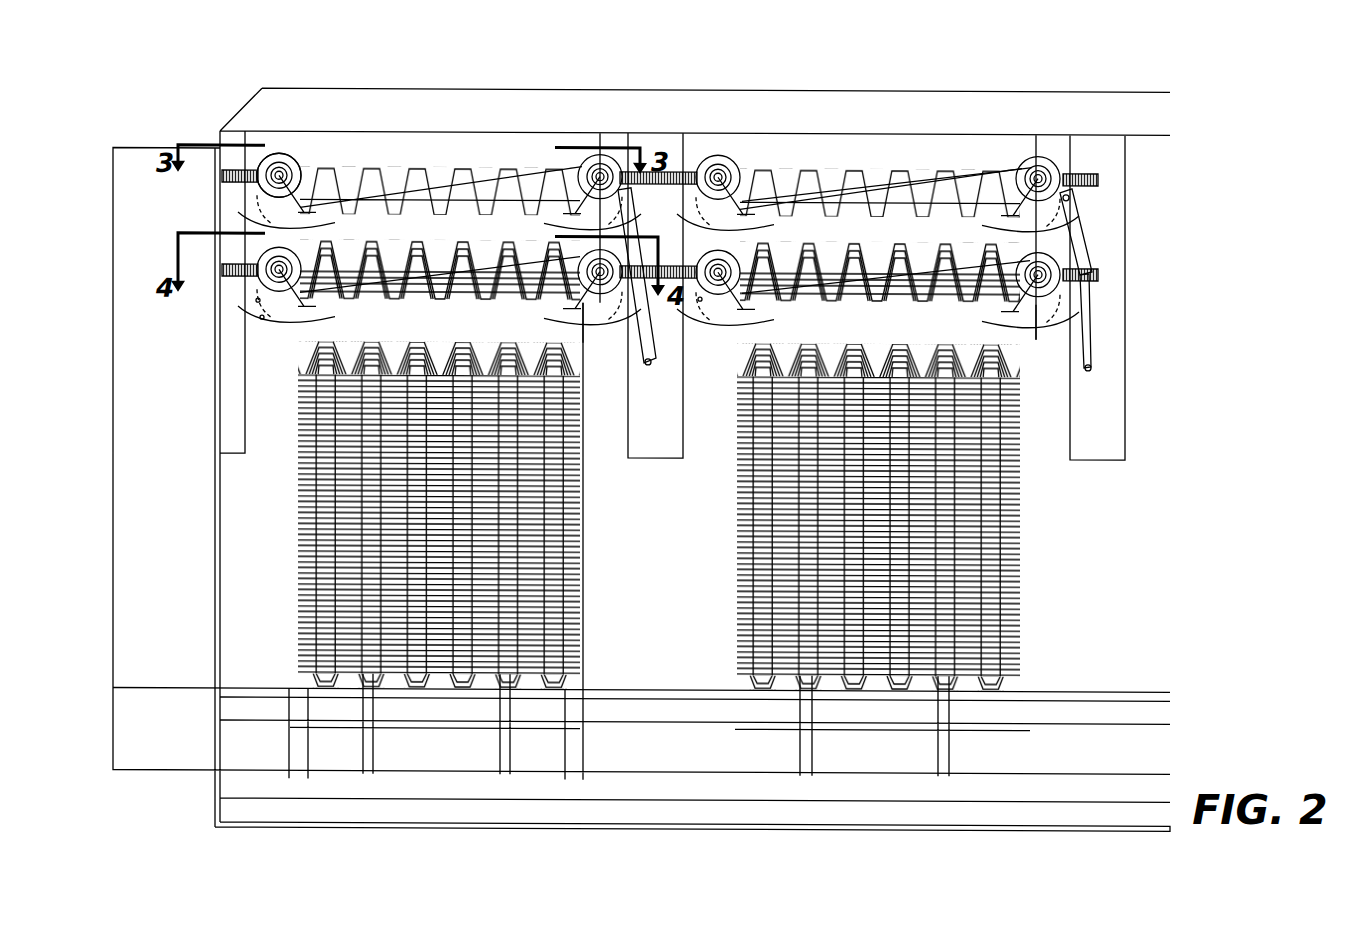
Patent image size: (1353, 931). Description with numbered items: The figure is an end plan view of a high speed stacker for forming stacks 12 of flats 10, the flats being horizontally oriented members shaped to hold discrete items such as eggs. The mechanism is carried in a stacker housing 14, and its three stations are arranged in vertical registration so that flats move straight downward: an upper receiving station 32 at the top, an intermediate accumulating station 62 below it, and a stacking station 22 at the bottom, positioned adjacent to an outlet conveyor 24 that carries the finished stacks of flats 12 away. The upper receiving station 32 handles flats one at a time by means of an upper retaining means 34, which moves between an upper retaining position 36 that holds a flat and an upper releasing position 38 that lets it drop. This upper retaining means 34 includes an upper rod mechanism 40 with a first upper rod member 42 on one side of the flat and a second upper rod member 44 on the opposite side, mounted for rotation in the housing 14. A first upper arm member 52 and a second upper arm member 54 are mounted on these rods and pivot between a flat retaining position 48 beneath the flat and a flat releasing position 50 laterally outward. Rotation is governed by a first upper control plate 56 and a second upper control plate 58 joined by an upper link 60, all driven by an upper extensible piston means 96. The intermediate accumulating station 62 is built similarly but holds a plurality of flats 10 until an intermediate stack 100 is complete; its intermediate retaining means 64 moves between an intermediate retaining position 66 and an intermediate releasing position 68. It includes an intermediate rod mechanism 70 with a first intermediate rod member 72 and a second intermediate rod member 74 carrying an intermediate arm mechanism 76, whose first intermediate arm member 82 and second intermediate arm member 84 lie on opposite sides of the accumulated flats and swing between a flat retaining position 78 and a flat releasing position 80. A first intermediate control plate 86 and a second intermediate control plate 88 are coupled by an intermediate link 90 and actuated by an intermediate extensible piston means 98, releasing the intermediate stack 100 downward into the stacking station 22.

The flat 10 is at (496, 160).
The stack of flats 12 is at (298, 578).
The stacker housing 14 is at (215, 505).
The stacking station 22 is at (737, 655).
The outlet conveyor 24 is at (430, 700).
The upper receiving station 32 is at (233, 165).
The upper retaining means 34 is at (300, 190).
The upper retaining position 36 is at (1025, 165).
The upper releasing position 38 is at (262, 200).
The upper rod mechanism 40 is at (283, 165).
The first upper rod member 42 is at (1045, 160).
The second upper rod member 44 is at (770, 165).
The flat retaining position 48 is at (1003, 220).
The flat releasing position 50 is at (1085, 205).
The first upper arm member 52 is at (1010, 205).
The second upper arm member 54 is at (720, 205).
The first upper control plate 56 is at (575, 155).
The second upper control plate 58 is at (268, 160).
The upper link 60 is at (950, 165).
The intermediate accumulating station 62 is at (260, 287).
The intermediate retaining means 64 is at (745, 300).
The intermediate retaining position 66 is at (285, 305).
The intermediate releasing position 68 is at (262, 318).
The intermediate rod mechanism 70 is at (300, 250).
The first intermediate rod member 72 is at (1036, 325).
The second intermediate rod member 74 is at (728, 262).
The intermediate arm mechanism 76 is at (700, 300).
The flat retaining position 78 is at (315, 305).
The flat releasing position 80 is at (258, 300).
The first intermediate arm member 82 is at (565, 305).
The second intermediate arm member 84 is at (300, 320).
The first intermediate control plate 86 is at (612, 300).
The second intermediate control plate 88 is at (262, 250).
The intermediate link 90 is at (478, 262).
The upper extensible piston means 96 is at (638, 206).
The intermediate extensible piston means 98 is at (648, 360).
The intermediate stack 100 is at (862, 295).